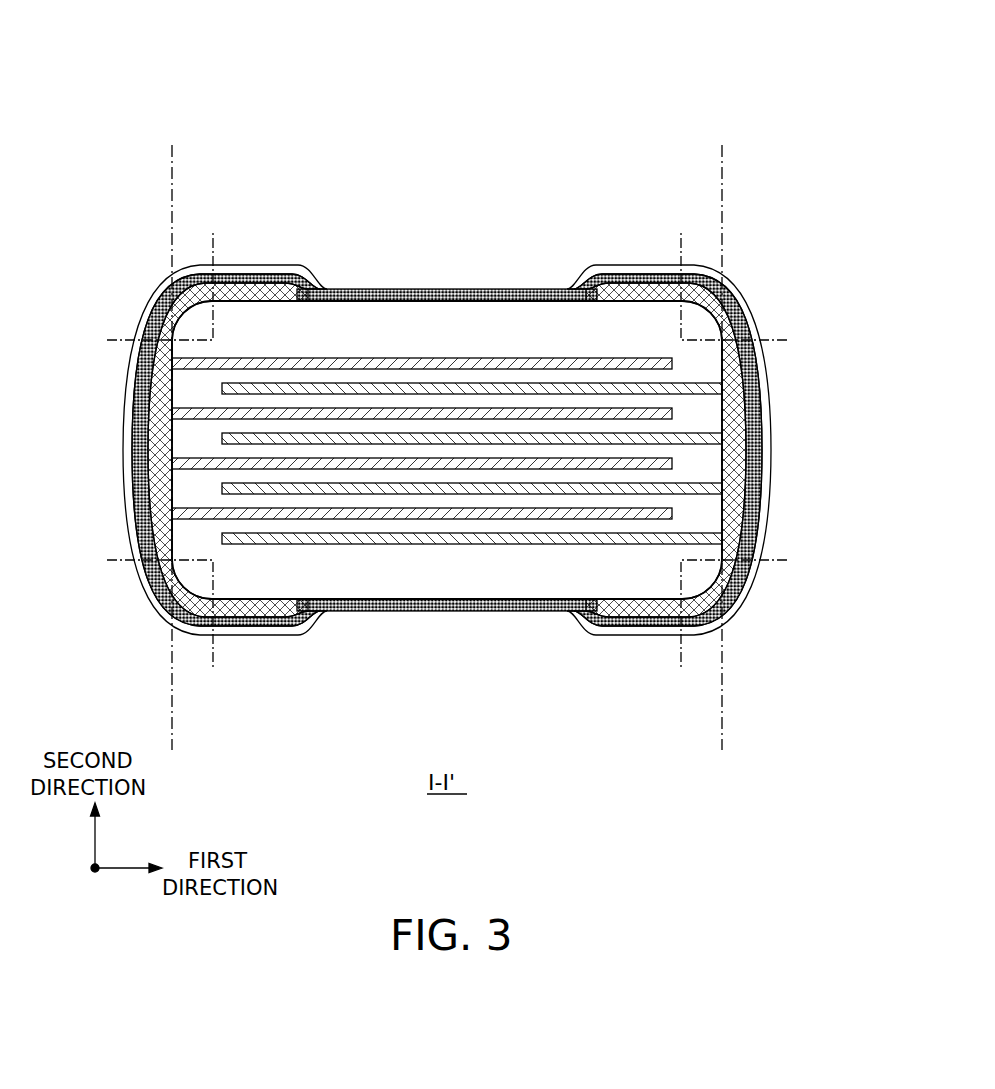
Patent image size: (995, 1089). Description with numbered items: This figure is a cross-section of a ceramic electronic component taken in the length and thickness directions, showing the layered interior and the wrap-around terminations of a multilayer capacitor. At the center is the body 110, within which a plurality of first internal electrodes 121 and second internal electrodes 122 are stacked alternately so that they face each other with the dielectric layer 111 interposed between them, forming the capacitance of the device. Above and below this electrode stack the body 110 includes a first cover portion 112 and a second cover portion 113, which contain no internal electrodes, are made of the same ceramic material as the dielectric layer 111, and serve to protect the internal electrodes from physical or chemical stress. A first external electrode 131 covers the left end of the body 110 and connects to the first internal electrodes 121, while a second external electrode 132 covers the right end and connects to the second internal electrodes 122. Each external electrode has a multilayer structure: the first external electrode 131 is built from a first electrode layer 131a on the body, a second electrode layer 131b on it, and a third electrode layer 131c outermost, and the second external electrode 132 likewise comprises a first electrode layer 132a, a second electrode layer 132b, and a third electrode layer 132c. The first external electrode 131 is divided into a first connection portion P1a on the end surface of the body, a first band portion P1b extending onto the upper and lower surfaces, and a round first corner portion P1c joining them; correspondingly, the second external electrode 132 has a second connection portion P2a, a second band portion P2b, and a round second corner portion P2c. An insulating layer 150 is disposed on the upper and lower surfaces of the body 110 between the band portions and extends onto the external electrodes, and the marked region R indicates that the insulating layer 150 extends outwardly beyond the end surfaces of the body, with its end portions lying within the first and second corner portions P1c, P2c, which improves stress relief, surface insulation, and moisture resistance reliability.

The body 110 is at (572, 297).
The dielectric layer 111 is at (515, 375).
The first cover portion 112 is at (315, 325).
The second cover portion 113 is at (400, 582).
The first internal electrode 121 is at (382, 360).
The second internal electrode 122 is at (450, 385).
The first external electrode 131 is at (170, 8).
The first electrode layer 131a is at (92, 421).
The second electrode layer 131b is at (92, 450).
The third electrode layer 131c is at (92, 478).
The second external electrode 132 is at (726, 8).
The first electrode layer 132a is at (803, 421).
The second electrode layer 132b is at (803, 450).
The third electrode layer 132c is at (803, 478).
The insulating layer 150 is at (512, 605).
The first connection portion P1a is at (106, 517).
The first band portion P1b is at (248, 240).
The first corner portion P1c is at (136, 300).
The second connection portion P2a is at (790, 517).
The second band portion P2b is at (655, 240).
The second corner portion P2c is at (762, 300).
The outward extension region R is at (172, 175).